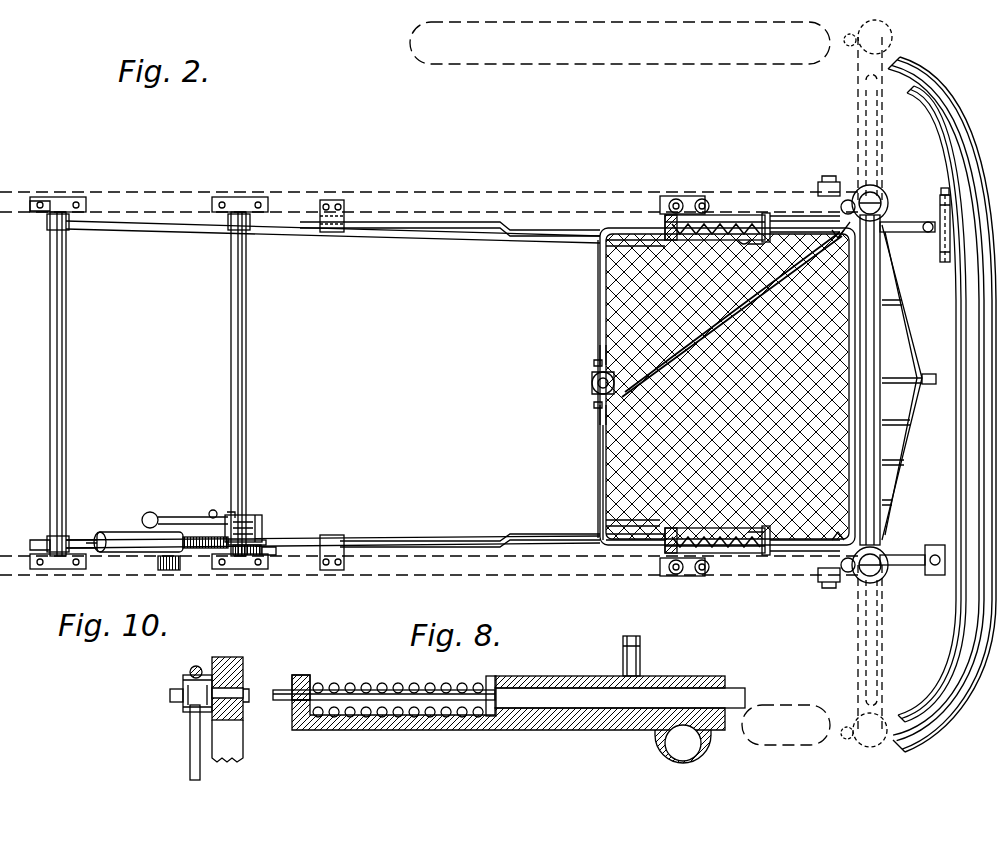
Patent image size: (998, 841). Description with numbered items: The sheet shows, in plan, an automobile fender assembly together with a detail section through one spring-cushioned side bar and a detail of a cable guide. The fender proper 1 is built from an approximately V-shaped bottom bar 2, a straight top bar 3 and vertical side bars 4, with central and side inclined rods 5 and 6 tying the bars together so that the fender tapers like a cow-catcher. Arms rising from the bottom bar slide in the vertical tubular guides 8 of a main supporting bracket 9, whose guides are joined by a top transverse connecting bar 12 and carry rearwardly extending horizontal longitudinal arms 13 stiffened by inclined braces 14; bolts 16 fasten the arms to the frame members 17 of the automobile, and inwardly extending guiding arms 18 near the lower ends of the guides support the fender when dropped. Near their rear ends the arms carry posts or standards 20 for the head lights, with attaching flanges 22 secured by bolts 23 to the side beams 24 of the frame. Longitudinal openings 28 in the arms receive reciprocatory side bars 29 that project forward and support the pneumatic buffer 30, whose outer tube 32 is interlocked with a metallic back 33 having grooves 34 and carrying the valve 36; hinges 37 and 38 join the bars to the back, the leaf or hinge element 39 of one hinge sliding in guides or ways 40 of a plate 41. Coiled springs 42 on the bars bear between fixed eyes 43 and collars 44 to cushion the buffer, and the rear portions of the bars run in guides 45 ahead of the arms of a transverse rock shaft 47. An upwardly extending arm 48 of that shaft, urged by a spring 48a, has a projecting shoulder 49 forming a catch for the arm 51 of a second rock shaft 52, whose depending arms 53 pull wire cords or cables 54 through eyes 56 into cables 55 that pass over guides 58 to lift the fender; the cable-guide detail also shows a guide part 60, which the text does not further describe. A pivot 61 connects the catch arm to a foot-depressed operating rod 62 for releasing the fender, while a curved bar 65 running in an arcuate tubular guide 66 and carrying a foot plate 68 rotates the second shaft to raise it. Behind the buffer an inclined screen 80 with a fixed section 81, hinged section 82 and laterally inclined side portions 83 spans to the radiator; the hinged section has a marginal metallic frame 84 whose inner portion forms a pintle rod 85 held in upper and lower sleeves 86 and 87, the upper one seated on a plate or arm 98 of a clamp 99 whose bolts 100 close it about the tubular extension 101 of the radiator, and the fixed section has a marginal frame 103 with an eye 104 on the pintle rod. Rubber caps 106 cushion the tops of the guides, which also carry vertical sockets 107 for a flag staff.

In FIG. 2, the fender proper 1 is at (910, 335).
In FIG. 2, the bottom bar 2 is at (905, 424).
In FIG. 2, the top bar 3 is at (912, 360).
In FIG. 2, the side bars 4 is at (884, 236).
In FIG. 2, the central inclined rods 5 is at (896, 383).
In FIG. 2, the side inclined rods 6 is at (904, 462).
In FIG. 2, the tubular guides 8 is at (874, 194).
In FIG. 8, the tubular guides 8 is at (704, 752).
In FIG. 2, the main supporting bracket 9 is at (780, 221).
In FIG. 8, the main supporting bracket 9 is at (620, 730).
In FIG. 2, the top transverse connecting bar 12 is at (890, 502).
In FIG. 2, the horizontal longitudinal arms 13 is at (738, 215).
In FIG. 8, the horizontal longitudinal arms 13 is at (460, 730).
In FIG. 10, the inclined braces 14 is at (235, 658).
In FIG. 2, the bolts 16 is at (828, 182).
In FIG. 2, the frame members 17 is at (835, 215).
In FIG. 2, the guiding arms 18 is at (868, 70).
In FIG. 2, the posts or standards 20 is at (702, 199).
In FIG. 2, the attaching flanges 22 is at (672, 200).
In FIG. 2, the bolts 23 is at (678, 390).
In FIG. 2, the side beams 24 is at (290, 197).
In FIG. 8, the longitudinal openings 28 is at (568, 676).
In FIG. 2, the reciprocatory side bars 29 is at (464, 222).
In FIG. 8, the reciprocatory side bars 29 is at (745, 697).
In FIG. 2, the pneumatic buffer 30 is at (944, 586).
In FIG. 2, the outer tube 32 is at (962, 72).
In FIG. 2, the metallic back 33 is at (934, 92).
In FIG. 2, the grooves 34 is at (950, 642).
In FIG. 2, the valve 36 is at (934, 384).
In FIG. 2, the hinge 37 is at (930, 575).
In FIG. 2, the hinge 38 is at (950, 202).
In FIG. 2, the leaf or hinge element 39 is at (944, 196).
In FIG. 2, the guides or ways 40 is at (934, 232).
In FIG. 2, the plate 41 is at (945, 188).
In FIG. 2, the coiled springs 42 is at (720, 236).
In FIG. 8, the coiled springs 42 is at (386, 683).
In FIG. 2, the fixed eyes 43 is at (671, 240).
In FIG. 8, the fixed eyes 43 is at (305, 675).
In FIG. 2, the collars 44 is at (766, 222).
In FIG. 8, the collars 44 is at (492, 676).
In FIG. 2, the guides 45 is at (332, 232).
In FIG. 2, the transverse rock shaft 47 is at (252, 384).
In FIG. 2, the arm 48 is at (275, 552).
In FIG. 2, the spring 48a is at (232, 512).
In FIG. 2, the projecting shoulder 49 is at (248, 555).
In FIG. 2, the arm 51 is at (84, 540).
In FIG. 2, the rock shaft 52 is at (75, 384).
In FIG. 2, the depending arms 53 is at (38, 214).
In FIG. 2, the wire cords or cables 54 is at (176, 231).
In FIG. 2, the wire cords or cables 55 is at (744, 238).
In FIG. 10, the wire cords or cables 55 is at (190, 750).
In FIG. 2, the eyes 56 is at (758, 246).
In FIG. 2, the guides 58 is at (836, 240).
In FIG. 8, the guides 58 is at (640, 660).
In FIG. 10, the collar 60 is at (184, 708).
In FIG. 2, the pivot 61 is at (255, 515).
In FIG. 2, the operating rod 62 is at (183, 517).
In FIG. 2, the curved bar 65 is at (200, 548).
In FIG. 2, the arcuate tubular guide 66 is at (122, 532).
In FIG. 2, the foot plate 68 is at (168, 570).
In FIG. 2, the screen 80 is at (600, 280).
In FIG. 2, the fixed section 81 is at (604, 300).
In FIG. 2, the hinged section 82 is at (606, 522).
In FIG. 2, the side portions 83 is at (612, 232).
In FIG. 2, the marginal metallic frame 84 is at (603, 440).
In FIG. 2, the pintle rod 85 is at (600, 350).
In FIG. 2, the upper eye or sleeve 86 is at (600, 418).
In FIG. 2, the lower eye or sleeve 87 is at (832, 232).
In FIG. 2, the plate or arm 98 is at (624, 385).
In FIG. 2, the clamp 99 is at (592, 380).
In FIG. 2, the bolts 100 is at (594, 362).
In FIG. 2, the tubular extension 101 is at (592, 387).
In FIG. 2, the marginal frame 103 is at (598, 290).
In FIG. 2, the eye 104 is at (800, 216).
In FIG. 2, the caps 106 is at (892, 32).
In FIG. 2, the vertical sockets 107 is at (848, 200).